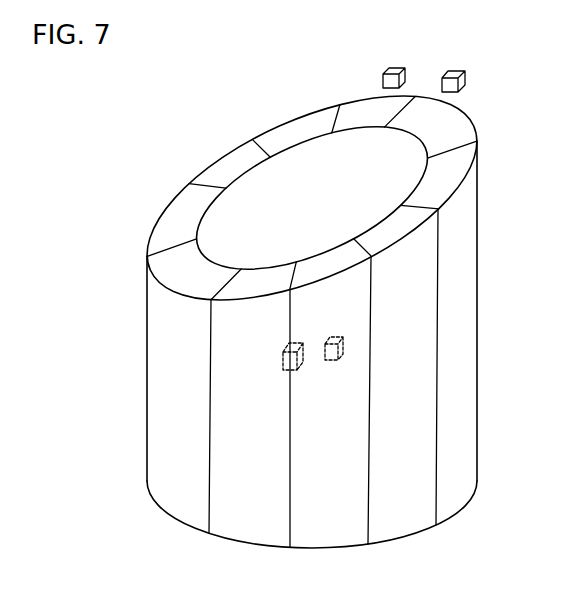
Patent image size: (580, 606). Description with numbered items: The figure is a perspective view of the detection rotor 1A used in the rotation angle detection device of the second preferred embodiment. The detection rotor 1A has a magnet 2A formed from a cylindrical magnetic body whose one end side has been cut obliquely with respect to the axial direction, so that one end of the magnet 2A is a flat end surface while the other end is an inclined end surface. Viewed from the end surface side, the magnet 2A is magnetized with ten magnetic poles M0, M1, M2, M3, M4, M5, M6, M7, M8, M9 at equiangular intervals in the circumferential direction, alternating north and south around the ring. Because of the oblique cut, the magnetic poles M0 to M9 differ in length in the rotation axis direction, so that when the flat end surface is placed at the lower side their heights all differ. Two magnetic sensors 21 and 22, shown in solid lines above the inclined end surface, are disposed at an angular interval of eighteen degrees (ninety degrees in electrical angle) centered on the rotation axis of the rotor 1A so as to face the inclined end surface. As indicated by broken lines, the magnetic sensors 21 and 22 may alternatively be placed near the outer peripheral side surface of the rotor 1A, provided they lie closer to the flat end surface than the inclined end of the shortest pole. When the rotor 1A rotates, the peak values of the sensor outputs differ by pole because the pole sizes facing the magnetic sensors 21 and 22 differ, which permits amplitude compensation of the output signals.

The detection rotor 1A is at (290, 96).
The magnet 2A is at (147, 408).
The magnetic pole M0 is at (343, 108).
The magnetic pole M1 is at (474, 118).
The magnetic pole M2 is at (470, 156).
The magnetic pole M3 is at (406, 238).
The magnetic pole M4 is at (340, 270).
The magnetic pole M5 is at (238, 300).
The magnetic pole M6 is at (178, 294).
The magnetic pole M7 is at (160, 223).
The magnetic pole M8 is at (210, 170).
The magnetic pole M9 is at (276, 133).
The magnetic sensor 21 is at (397, 66).
The magnetic sensor 22 is at (452, 70).